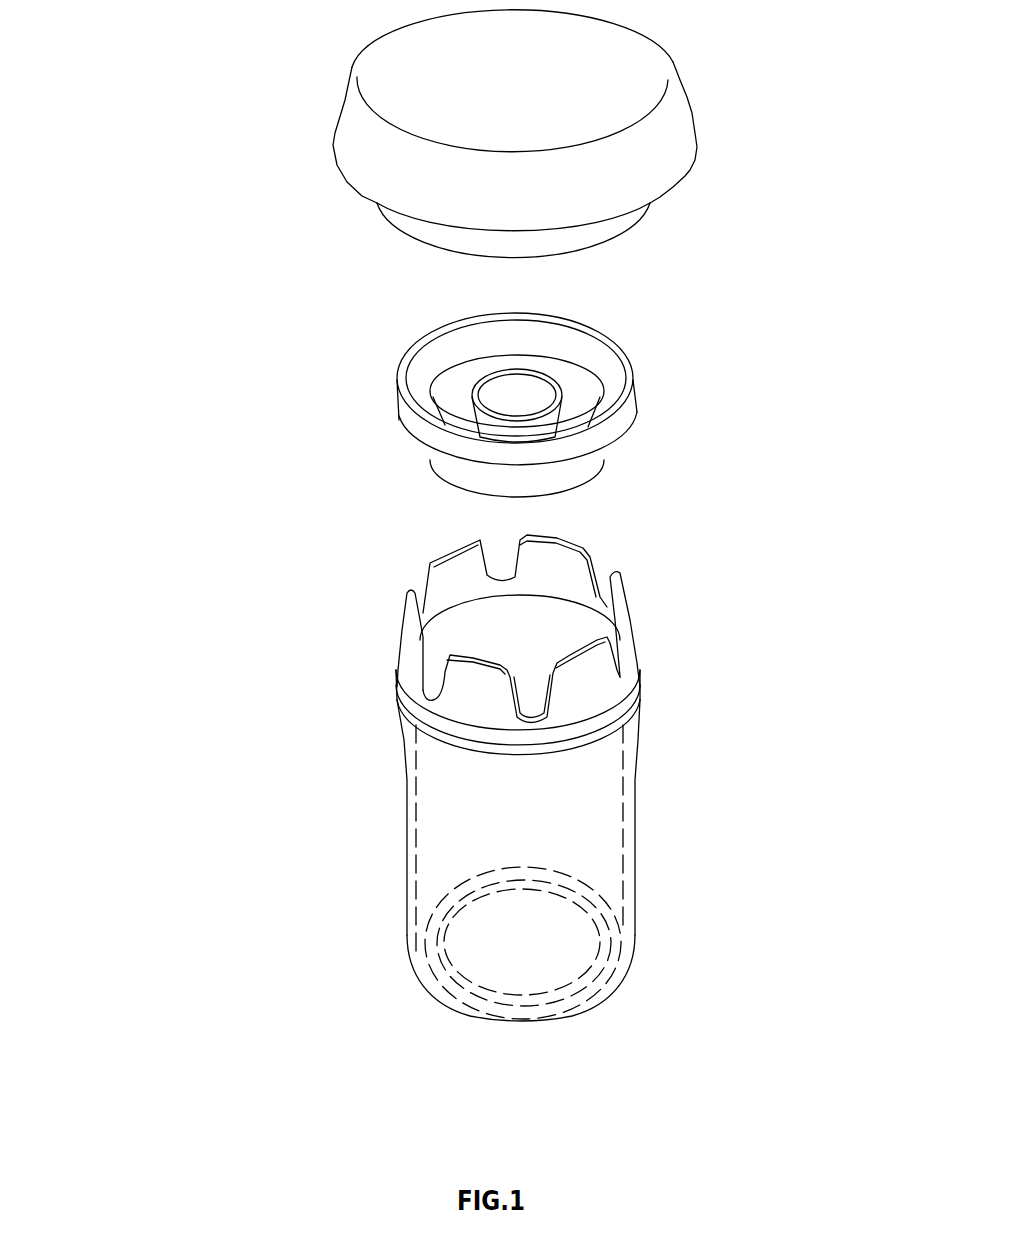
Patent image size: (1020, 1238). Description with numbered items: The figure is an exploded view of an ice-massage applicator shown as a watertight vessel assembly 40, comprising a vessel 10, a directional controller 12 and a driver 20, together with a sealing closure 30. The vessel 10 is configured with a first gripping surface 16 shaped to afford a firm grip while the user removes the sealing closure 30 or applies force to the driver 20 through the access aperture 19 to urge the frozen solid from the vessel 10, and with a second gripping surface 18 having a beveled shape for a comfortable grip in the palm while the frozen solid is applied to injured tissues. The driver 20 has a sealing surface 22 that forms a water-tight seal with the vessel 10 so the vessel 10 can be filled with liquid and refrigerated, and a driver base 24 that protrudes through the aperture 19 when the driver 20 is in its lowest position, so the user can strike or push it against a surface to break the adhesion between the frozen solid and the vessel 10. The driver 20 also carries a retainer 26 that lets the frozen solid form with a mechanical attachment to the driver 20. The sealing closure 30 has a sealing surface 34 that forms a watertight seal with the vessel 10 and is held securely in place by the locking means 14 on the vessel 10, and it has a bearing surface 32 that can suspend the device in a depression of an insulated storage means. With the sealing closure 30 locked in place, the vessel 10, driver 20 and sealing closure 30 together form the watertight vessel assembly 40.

The vessel 10 is at (652, 790).
The directional controller 12 is at (626, 600).
The locking means 14 is at (635, 681).
The first gripping surface 16 is at (632, 810).
The second gripping surface 18 is at (573, 1012).
The access aperture 19 is at (578, 978).
The driver 20 is at (653, 425).
The sealing surface 22 is at (623, 433).
The driver base 24 is at (577, 480).
The retainer 26 is at (553, 384).
The sealing closure 30 is at (623, 134).
The bearing surface 32 is at (683, 175).
The sealing surface 34 is at (640, 223).
The water-tight vessel assembly 40 is at (271, 130).